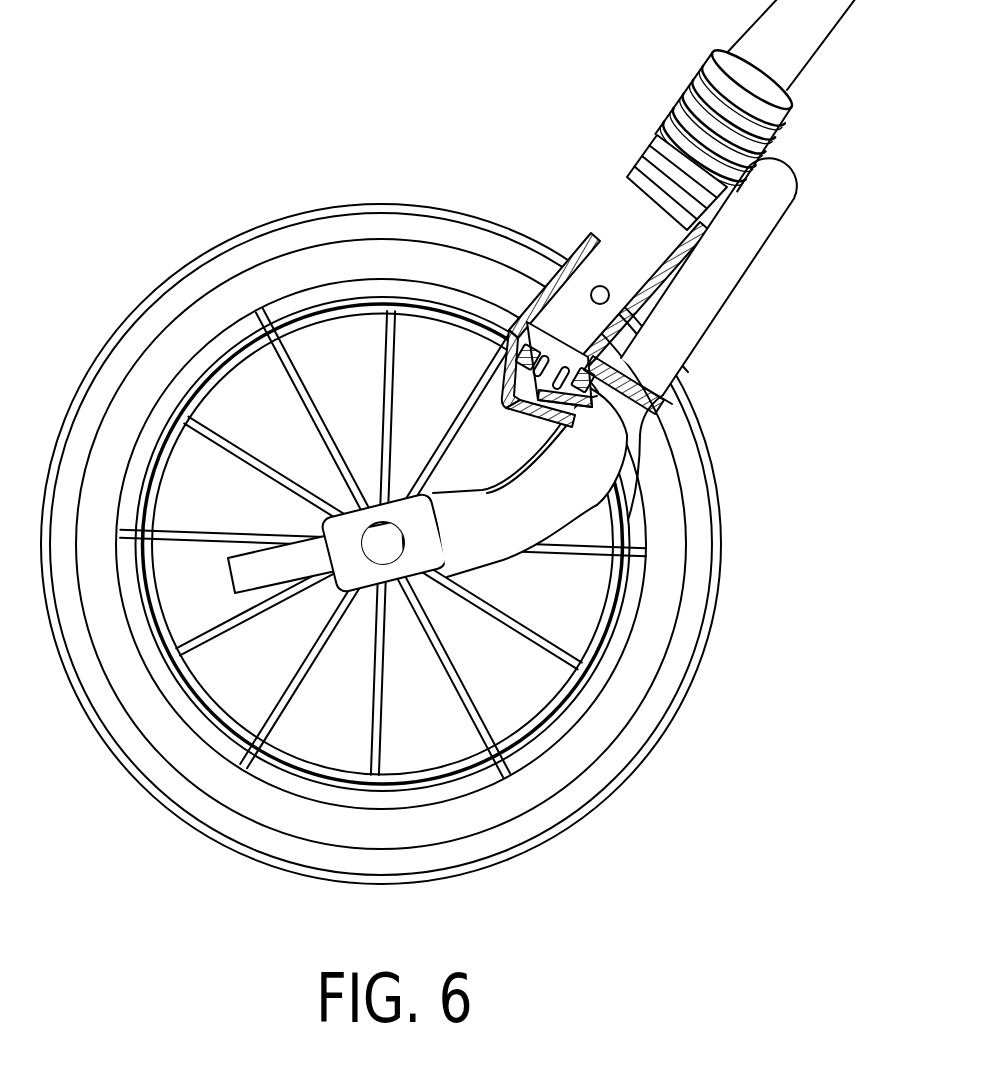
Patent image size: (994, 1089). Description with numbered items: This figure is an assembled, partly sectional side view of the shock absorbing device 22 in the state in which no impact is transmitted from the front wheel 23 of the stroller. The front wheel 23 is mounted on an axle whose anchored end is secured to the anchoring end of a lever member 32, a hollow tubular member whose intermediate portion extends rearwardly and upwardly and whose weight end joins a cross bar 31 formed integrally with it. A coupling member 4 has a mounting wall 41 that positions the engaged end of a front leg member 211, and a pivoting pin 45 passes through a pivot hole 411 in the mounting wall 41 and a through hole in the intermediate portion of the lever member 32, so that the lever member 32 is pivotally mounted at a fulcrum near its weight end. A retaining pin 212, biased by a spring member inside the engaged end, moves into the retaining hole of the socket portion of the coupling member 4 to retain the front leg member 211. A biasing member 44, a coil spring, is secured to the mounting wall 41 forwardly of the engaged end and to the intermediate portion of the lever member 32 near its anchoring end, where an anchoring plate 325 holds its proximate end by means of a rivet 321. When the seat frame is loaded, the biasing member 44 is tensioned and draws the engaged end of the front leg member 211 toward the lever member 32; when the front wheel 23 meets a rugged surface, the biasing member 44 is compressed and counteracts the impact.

The shock absorbing device 22 is at (533, 193).
The front wheel 23 is at (697, 613).
The coupling member 4 is at (578, 230).
The biasing member 44 is at (545, 282).
The front leg member 211 is at (643, 217).
The retaining pin 212 is at (600, 286).
The cross bar 31 is at (780, 160).
The lever member 32 is at (693, 307).
The mounting wall 41 is at (700, 333).
The pivoting pin 45 is at (670, 348).
The pivot hole 411 is at (683, 375).
The rivet 321 is at (668, 402).
The anchoring plate 325 is at (640, 458).